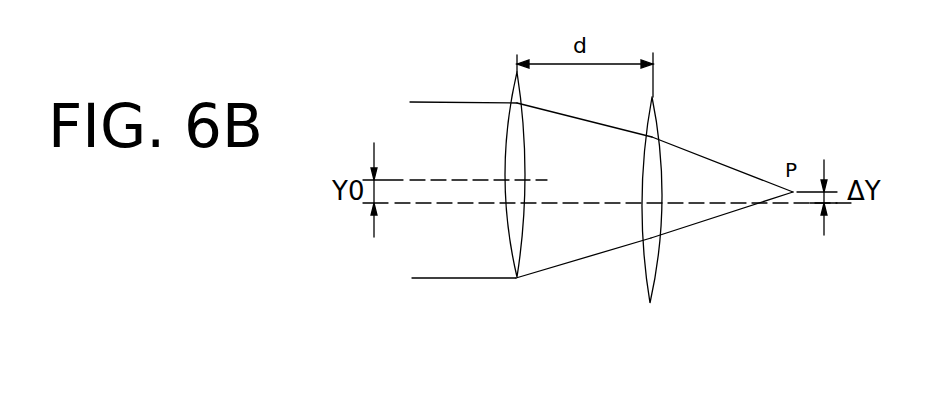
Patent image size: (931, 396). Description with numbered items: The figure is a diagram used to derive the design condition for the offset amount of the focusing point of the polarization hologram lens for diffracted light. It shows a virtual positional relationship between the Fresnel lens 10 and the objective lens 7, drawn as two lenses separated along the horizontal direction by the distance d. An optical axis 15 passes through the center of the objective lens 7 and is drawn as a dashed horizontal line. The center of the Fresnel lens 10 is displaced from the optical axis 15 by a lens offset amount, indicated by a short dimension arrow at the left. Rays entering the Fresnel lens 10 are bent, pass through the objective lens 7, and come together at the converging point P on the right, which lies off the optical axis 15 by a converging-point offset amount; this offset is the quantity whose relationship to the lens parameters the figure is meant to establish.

The Fresnel lens 10 is at (517, 277).
The objective lens 7 is at (650, 303).
The optical axis 15 is at (400, 203).